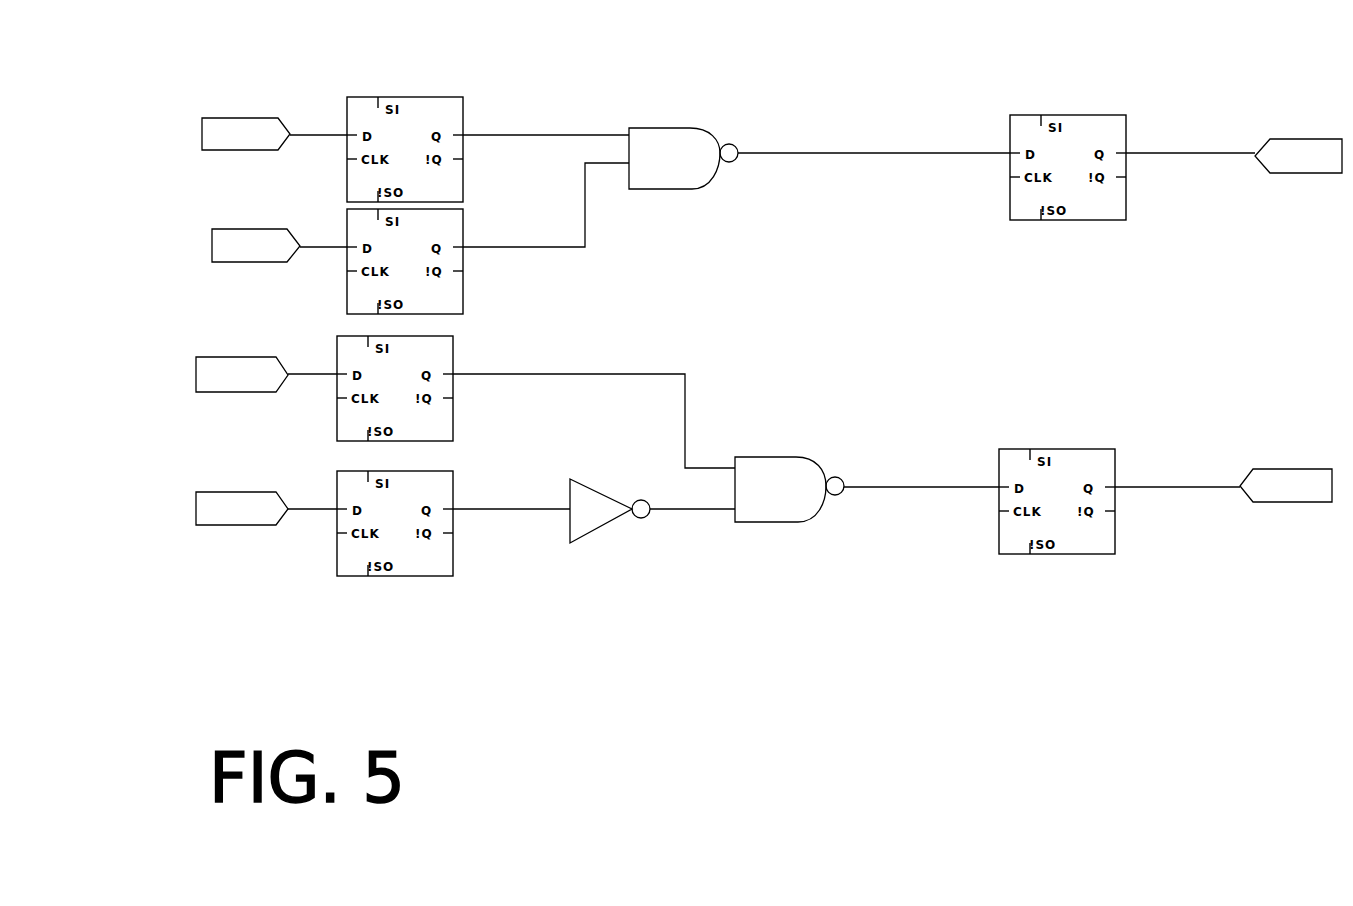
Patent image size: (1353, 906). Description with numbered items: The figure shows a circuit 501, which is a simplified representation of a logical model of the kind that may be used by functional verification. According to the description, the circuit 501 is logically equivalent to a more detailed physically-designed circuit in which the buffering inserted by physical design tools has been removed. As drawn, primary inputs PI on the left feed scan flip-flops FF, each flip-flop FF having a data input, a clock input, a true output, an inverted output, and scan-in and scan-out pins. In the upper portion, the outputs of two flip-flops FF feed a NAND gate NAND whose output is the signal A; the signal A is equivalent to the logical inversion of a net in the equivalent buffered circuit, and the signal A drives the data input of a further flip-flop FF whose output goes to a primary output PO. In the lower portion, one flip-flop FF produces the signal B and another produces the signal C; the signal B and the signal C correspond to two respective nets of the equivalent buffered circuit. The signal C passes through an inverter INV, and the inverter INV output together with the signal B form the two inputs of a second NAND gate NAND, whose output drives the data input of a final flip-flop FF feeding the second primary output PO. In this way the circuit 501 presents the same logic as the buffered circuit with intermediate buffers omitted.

The circuit 501 is at (1098, 49).
The primary input PI is at (248, 321).
The primary output PO is at (1291, 320).
The scan flip-flop FF is at (731, 336).
The NAND gate NAND is at (736, 325).
The inverter INV is at (610, 511).
The Signal A is at (874, 140).
The Signal B is at (594, 408).
The Signal C is at (511, 496).